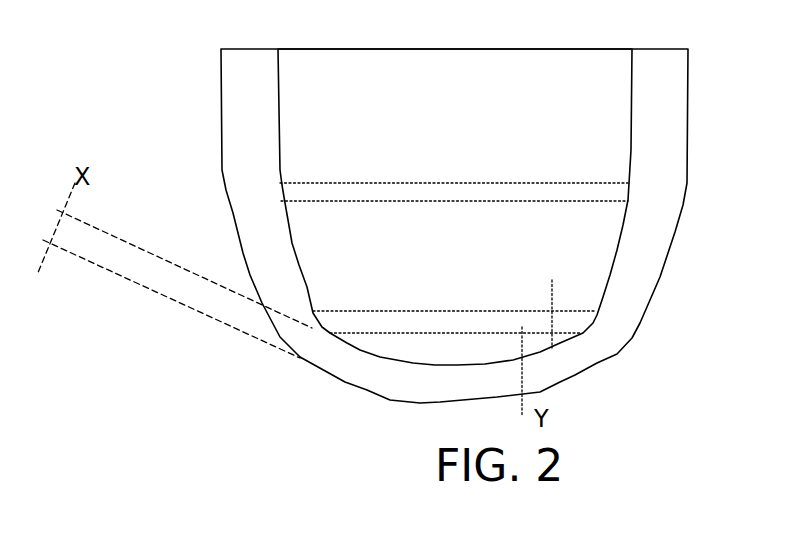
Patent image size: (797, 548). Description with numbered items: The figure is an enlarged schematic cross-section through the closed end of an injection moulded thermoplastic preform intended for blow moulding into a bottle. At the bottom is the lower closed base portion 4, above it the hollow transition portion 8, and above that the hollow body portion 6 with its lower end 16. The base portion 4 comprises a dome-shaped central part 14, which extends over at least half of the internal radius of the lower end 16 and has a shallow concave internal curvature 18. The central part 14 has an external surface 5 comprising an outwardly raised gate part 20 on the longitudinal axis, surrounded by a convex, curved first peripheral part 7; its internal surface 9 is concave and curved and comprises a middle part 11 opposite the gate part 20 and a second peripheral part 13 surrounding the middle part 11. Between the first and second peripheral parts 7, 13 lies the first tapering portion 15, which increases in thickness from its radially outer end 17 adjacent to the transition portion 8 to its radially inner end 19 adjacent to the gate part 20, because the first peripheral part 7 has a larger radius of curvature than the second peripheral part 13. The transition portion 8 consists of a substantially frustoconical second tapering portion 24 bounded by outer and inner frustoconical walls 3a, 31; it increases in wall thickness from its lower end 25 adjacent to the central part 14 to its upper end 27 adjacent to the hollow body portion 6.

The hollow body portion 6 is at (683, 98).
The lower end of the hollow body portion 16 is at (662, 183).
The upper end of the second tapering portion 27 is at (650, 202).
The second tapering portion 24 is at (648, 258).
The lower end of the second tapering portion 25 is at (613, 323).
The lower closed base portion 4 is at (597, 363).
The central part 14 is at (565, 383).
The radially inner end of the first tapering portion 19 is at (500, 380).
The second peripheral part 13 is at (561, 297).
The middle part 11 is at (458, 363).
The internal surface 9 is at (410, 362).
The shallow concave internal curvature 18 is at (387, 355).
The inner frustoconical wall 31 is at (292, 243).
The hollow transition portion 8 is at (262, 260).
The outer frustoconical wall 3a is at (258, 273).
The radially outer end of the first tapering portion 17 is at (318, 348).
The first tapering portion 15 is at (335, 363).
The first peripheral part 7 is at (345, 380).
The external surface 5 is at (372, 392).
The gate part 20 is at (418, 420).